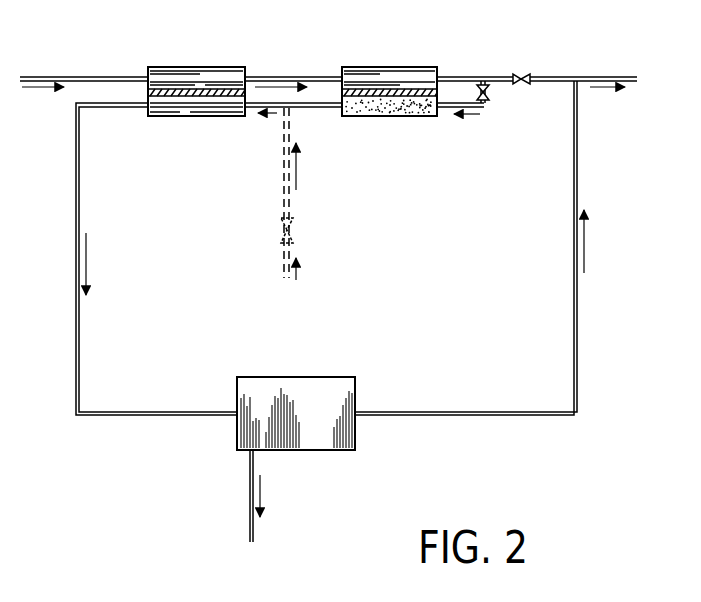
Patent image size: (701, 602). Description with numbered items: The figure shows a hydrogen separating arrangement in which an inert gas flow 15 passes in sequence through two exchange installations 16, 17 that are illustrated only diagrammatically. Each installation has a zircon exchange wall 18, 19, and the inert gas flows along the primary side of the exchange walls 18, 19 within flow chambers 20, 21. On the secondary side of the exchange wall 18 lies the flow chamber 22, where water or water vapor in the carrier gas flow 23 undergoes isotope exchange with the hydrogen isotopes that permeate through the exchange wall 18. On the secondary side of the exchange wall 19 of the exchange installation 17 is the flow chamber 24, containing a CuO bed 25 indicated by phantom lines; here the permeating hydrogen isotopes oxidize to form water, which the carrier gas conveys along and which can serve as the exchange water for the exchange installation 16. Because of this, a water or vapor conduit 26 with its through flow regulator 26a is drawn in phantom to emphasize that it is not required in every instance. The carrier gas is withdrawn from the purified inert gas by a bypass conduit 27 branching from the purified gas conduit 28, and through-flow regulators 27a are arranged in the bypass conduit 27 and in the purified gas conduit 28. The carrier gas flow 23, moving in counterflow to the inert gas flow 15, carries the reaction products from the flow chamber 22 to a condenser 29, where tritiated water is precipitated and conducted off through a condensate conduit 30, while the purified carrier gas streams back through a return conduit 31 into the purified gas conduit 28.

The inert gas flow 15 is at (101, 77).
The exchange installation 16 is at (170, 65).
The exchange installation 17 is at (408, 65).
The exchange wall 18 is at (188, 90).
The exchange wall 19 is at (384, 90).
The flow chamber 20 is at (218, 79).
The flow chamber 21 is at (350, 75).
The flow chamber 22 is at (237, 106).
The carrier gas flow 23 is at (80, 172).
The flow chamber 24 is at (420, 104).
The CuO bed 25 is at (366, 105).
The water or vapor conduit 26 is at (285, 197).
The through flow regulator 26a is at (283, 238).
The bypass conduit 27 is at (453, 105).
The through-flow regulators 27a is at (522, 86).
The purified gas conduit 28 is at (538, 77).
The condenser 29 is at (308, 398).
The condensate conduit 30 is at (250, 463).
The return conduit 31 is at (574, 257).